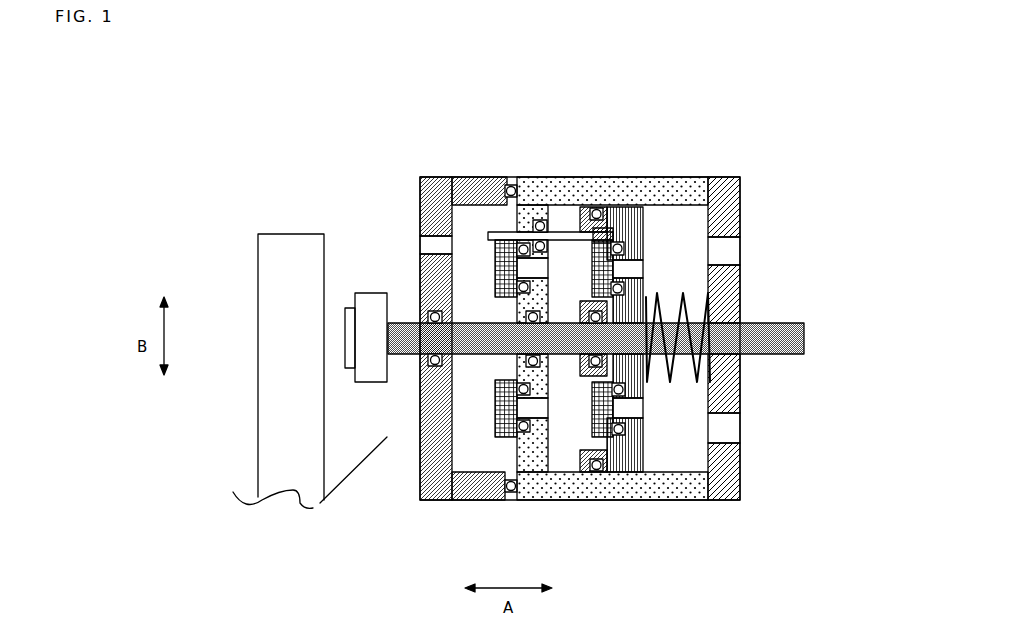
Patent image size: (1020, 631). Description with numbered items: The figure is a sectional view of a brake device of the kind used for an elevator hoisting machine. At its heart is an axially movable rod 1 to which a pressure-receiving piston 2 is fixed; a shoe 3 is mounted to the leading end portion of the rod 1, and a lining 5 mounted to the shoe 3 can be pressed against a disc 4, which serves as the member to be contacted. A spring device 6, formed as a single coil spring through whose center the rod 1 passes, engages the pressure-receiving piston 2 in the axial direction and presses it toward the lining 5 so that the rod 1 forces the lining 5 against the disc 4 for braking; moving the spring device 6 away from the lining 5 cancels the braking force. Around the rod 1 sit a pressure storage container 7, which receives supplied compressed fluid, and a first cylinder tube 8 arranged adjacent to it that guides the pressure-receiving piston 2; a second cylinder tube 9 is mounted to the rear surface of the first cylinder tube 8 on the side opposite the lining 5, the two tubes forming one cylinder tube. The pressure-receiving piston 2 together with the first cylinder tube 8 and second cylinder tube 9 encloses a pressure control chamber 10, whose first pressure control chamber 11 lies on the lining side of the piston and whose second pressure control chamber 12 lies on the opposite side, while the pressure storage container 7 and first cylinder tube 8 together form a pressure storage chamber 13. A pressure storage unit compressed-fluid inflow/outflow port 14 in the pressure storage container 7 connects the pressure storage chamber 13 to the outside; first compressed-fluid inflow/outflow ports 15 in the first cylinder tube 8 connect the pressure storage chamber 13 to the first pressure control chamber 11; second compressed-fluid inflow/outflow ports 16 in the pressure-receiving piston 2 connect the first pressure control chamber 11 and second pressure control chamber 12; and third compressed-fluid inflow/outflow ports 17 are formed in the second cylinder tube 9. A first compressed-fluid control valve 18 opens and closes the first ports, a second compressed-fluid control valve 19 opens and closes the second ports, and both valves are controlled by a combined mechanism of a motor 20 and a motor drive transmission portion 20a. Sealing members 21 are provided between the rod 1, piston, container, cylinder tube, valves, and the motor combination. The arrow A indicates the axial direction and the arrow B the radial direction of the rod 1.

The rod 1 is at (398, 330).
The pressure-receiving piston 2 is at (687, 312).
The shoe 3 is at (368, 305).
The disc 4 is at (272, 277).
The lining 5 is at (348, 305).
The spring device 6 is at (692, 307).
The pressure storage container 7 is at (403, 379).
The first cylinder tube 8 is at (522, 495).
The second cylinder tube 9 is at (722, 482).
The pressure control chamber 10 is at (655, 463).
The first pressure control chamber 11 is at (562, 460).
The second pressure control chamber 12 is at (697, 463).
The pressure storage chamber 13 is at (490, 472).
The pressure storage unit compressed-fluid inflow/outflow port 14 is at (430, 240).
The first compressed-fluid inflow/outflow port 15 is at (537, 410).
The second compressed-fluid inflow/outflow port 16 is at (657, 445).
The third compressed-fluid inflow/outflow port 17 is at (727, 428).
The first compressed-fluid control valve 18 is at (517, 205).
The second compressed-fluid control valve 19 is at (652, 242).
The motor 20 is at (612, 279).
The motor drive transmission portion 20a is at (552, 232).
The sealing member 21 is at (503, 232).